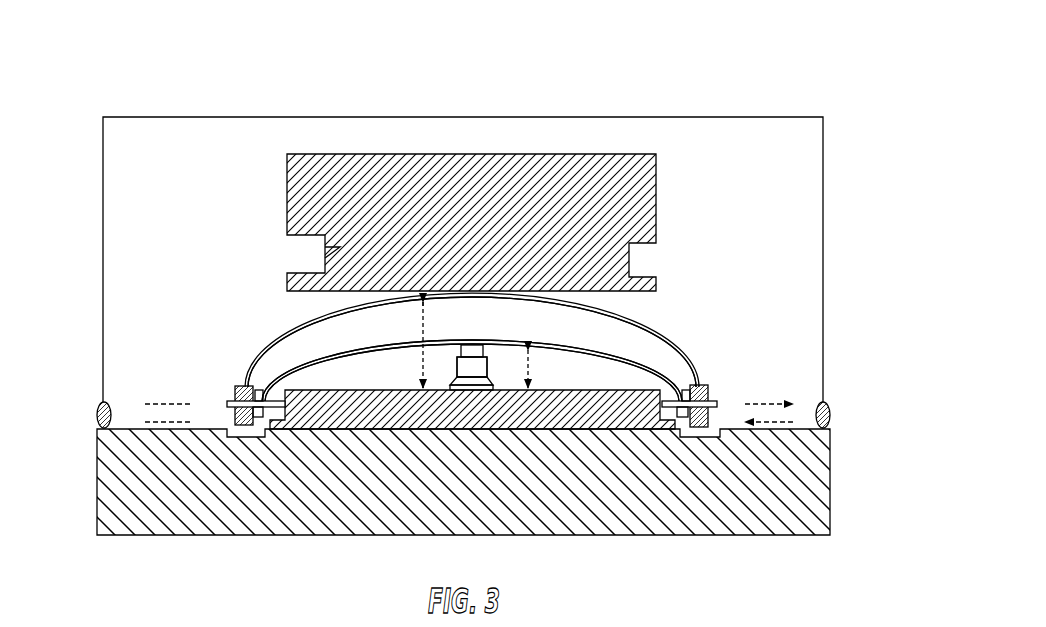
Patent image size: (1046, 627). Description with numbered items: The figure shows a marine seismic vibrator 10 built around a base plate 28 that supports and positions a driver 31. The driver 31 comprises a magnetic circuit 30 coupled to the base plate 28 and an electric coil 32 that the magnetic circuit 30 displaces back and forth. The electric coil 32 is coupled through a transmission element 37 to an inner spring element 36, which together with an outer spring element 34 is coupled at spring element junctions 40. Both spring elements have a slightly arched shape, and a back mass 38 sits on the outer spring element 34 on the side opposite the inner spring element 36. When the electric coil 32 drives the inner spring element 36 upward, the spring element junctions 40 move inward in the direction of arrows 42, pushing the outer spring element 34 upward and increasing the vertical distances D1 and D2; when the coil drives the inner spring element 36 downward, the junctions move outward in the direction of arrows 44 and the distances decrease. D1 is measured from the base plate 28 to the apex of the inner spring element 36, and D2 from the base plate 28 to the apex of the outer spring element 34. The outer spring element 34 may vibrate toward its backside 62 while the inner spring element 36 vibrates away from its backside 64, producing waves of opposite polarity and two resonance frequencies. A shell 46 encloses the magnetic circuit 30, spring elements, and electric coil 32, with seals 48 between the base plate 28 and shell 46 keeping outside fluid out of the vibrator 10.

The marine seismic vibrator 10 is at (181, 97).
The base plate 28 is at (484, 493).
The magnetic circuit 30 is at (499, 380).
The driver 31 is at (448, 376).
The electric coil 32 is at (450, 366).
The outer spring element 34 is at (633, 311).
The inner spring element 36 is at (366, 341).
The transmission element 37 is at (460, 348).
The back mass 38 is at (484, 235).
The spring element junctions 40 is at (243, 403).
The arrows 42 is at (160, 430).
The arrows 44 is at (168, 402).
The shell 46 is at (103, 160).
The seals 48 is at (100, 418).
The backside 62 is at (531, 308).
The backside 64 is at (338, 368).
The vertical distance D1 is at (530, 365).
The vertical distance D2 is at (421, 333).